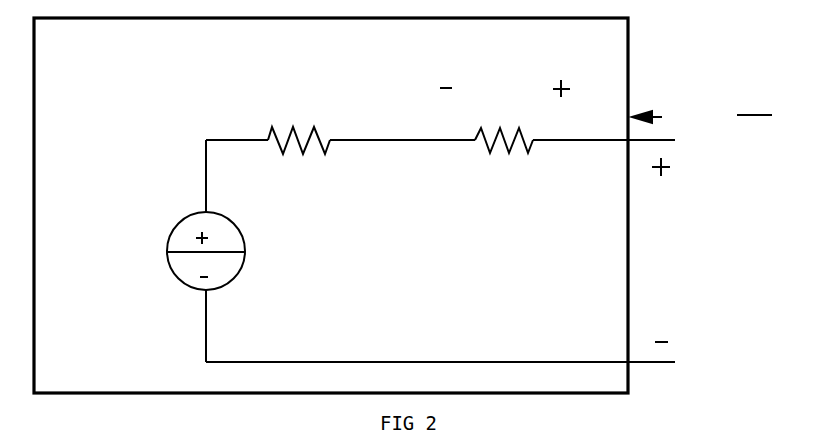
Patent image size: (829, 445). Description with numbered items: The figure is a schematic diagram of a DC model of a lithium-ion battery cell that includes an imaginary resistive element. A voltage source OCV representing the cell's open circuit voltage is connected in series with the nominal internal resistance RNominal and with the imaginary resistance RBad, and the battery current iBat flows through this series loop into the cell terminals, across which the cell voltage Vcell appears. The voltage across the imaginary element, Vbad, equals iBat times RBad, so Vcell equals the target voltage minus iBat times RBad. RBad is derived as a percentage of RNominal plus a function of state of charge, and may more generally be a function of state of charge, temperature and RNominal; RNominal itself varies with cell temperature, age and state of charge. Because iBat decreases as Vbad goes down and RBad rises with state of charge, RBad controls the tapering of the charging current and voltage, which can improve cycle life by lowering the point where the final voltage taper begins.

The open circuit voltage source OCV is at (154, 251).
The nominal resistance RNominal is at (296, 166).
The imaginary RBad element RBad is at (503, 166).
The voltage across RBad Vbad is at (505, 89).
The battery current iBat is at (702, 114).
The cell voltage Vcell is at (697, 250).